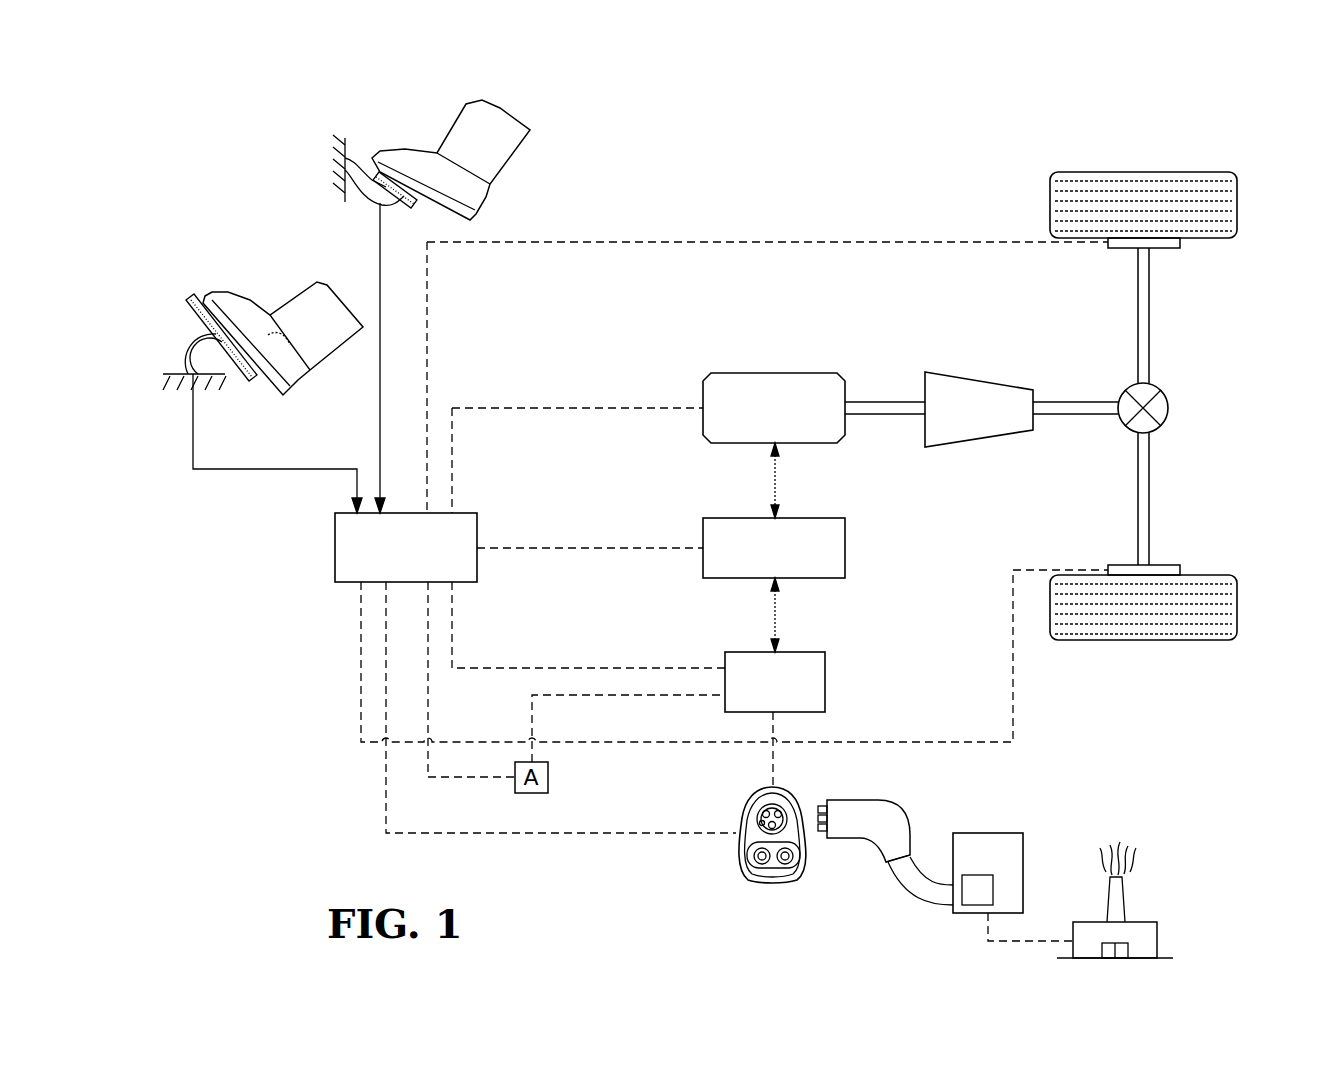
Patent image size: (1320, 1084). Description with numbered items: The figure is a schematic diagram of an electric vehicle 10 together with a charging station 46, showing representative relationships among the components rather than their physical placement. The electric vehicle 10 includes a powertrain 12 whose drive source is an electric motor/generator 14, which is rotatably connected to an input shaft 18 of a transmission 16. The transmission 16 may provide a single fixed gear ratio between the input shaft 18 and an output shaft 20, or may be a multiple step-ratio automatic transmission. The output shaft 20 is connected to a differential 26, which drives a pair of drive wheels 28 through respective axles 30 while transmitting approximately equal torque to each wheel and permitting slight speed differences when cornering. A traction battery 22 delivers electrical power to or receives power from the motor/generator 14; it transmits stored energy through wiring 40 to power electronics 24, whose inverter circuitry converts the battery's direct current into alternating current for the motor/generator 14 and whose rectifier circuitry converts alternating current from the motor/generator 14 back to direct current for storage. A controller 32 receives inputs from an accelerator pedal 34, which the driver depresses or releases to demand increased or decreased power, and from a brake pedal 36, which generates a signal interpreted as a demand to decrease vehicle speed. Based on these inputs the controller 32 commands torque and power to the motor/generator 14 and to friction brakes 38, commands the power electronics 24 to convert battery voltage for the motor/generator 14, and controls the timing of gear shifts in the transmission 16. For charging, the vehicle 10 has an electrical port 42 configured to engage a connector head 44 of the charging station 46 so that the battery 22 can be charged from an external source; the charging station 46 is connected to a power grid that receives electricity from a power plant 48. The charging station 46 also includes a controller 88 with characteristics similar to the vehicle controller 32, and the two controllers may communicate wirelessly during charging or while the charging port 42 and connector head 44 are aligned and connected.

The electric vehicle 10 is at (942, 88).
The powertrain 12 is at (827, 302).
The electric motor/generator 14 is at (703, 395).
The transmission 16 is at (985, 373).
The input shaft 18 is at (885, 403).
The output shaft 20 is at (1075, 402).
The traction battery 22 is at (725, 660).
The power electronics 24 is at (703, 533).
The differential 26 is at (1170, 408).
The drive wheels 28 is at (1145, 172).
The axles 30 is at (1152, 315).
The controller 32 is at (335, 548).
The accelerator pedal 34 is at (250, 275).
The brake pedal 36 is at (420, 120).
The friction brakes 38 is at (1180, 245).
The wiring 40 is at (778, 627).
The electrical port 42 is at (773, 882).
The connector head 44 is at (845, 800).
The charging station 46 is at (1014, 858).
The power plant 48 is at (1140, 922).
The controller 88 is at (978, 875).